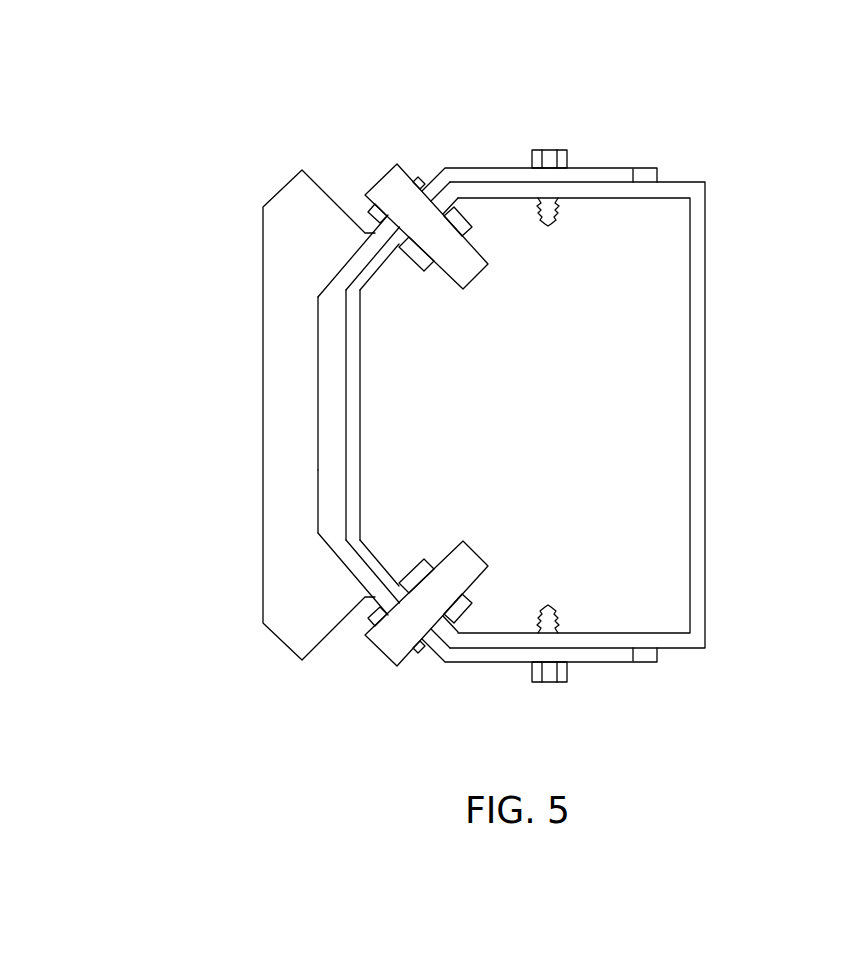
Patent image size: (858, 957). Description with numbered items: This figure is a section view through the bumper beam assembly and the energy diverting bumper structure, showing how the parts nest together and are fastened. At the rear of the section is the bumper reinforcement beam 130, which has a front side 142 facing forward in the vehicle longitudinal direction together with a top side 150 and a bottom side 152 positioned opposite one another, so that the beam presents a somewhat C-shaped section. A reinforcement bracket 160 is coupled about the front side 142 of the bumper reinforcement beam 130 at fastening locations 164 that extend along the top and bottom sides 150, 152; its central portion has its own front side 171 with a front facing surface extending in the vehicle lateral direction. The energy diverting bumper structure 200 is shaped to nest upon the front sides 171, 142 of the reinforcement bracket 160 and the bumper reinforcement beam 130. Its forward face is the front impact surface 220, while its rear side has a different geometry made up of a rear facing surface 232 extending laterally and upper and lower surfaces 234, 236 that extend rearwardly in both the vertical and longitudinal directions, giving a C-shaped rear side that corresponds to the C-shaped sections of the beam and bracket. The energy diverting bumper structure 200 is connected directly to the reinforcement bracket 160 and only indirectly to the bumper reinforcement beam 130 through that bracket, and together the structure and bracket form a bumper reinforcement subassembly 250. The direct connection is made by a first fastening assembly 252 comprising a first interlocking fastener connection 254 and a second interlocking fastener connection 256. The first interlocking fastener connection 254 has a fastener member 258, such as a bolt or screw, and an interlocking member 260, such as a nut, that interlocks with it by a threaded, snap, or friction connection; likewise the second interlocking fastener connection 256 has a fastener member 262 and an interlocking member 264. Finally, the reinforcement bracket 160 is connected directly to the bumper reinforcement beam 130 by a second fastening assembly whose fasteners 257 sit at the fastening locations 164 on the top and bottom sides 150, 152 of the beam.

The bumper reinforcement beam 130 is at (695, 408).
The front side 142 is at (353, 368).
The top side 150 is at (637, 170).
The bottom side 152 is at (637, 662).
The reinforcement bracket 160 is at (332, 468).
The fastening locations 164 is at (560, 150).
The front side 171 is at (318, 505).
The energy diverting bumper structure 200 is at (424, 418).
The front impact surface 220 is at (263, 267).
The rear facing surface 232 is at (319, 405).
The upper surface 234 is at (342, 267).
The lower surface 236 is at (332, 552).
The bumper reinforcement subassembly 250 is at (264, 390).
The first fastening assembly 252 is at (439, 158).
The first interlocking fastener connection 254 is at (450, 125).
The second interlocking fastener connection 256 is at (439, 663).
The fasteners 257 is at (537, 150).
The fastener member 258 is at (383, 177).
The interlocking member 260 is at (460, 220).
The fastener member 262 is at (383, 657).
The interlocking member 264 is at (457, 603).